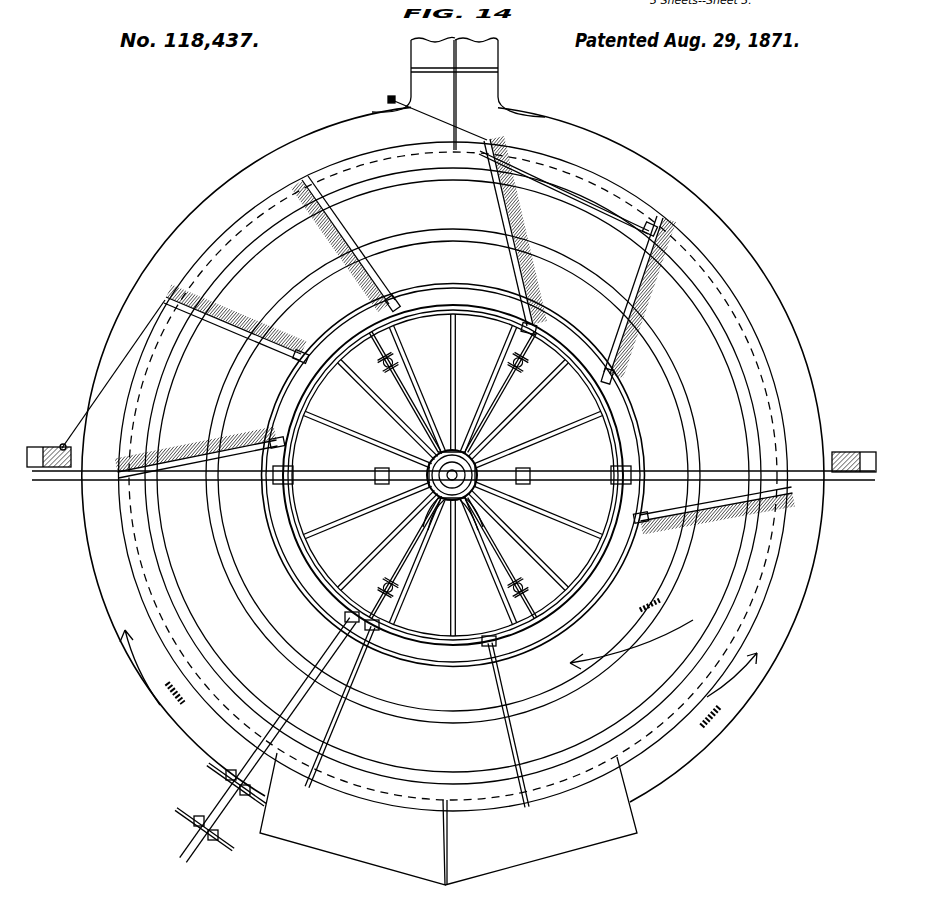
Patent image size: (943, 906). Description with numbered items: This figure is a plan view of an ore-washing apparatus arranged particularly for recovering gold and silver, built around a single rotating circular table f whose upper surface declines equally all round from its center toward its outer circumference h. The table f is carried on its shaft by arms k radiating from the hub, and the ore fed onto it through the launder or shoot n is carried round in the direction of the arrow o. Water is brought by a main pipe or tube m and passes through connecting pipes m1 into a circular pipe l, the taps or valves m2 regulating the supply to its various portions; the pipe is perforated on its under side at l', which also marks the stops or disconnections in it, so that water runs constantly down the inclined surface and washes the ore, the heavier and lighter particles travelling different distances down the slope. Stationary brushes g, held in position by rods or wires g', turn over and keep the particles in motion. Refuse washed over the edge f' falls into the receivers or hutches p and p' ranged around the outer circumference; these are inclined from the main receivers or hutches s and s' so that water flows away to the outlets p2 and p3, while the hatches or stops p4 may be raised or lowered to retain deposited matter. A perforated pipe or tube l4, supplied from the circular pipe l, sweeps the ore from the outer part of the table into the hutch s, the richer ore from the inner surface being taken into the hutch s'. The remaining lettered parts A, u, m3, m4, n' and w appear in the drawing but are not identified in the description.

The receiver or hutch p is at (453, 449).
The outlet p2 is at (453, 476).
The outlet p3 is at (454, 84).
The hatches or stops p4 is at (454, 93).
The receiver or hutch p' is at (451, 608).
The outer circumference h is at (453, 474).
The annular chambers A is at (453, 476).
The perforations or stops l' is at (453, 475).
The circular pipe l is at (422, 540).
The pipe or tube l4 is at (506, 721).
The arms k is at (452, 475).
The spoke u is at (538, 510).
The main pipe or tube m is at (453, 470).
The connecting pipes m1 is at (404, 392).
The taps or valves m2 is at (502, 392).
The valve m3 is at (405, 558).
The valve m4 is at (502, 558).
The launder or shoot n is at (265, 740).
The pipes n' is at (449, 458).
The stationary brushes g is at (455, 348).
The rods or wires g' is at (273, 277).
The circular table f is at (407, 439).
The edge of the table f' is at (568, 189).
The receiver or hutch s is at (541, 821).
The receiver or hutch s' is at (353, 819).
The arrow o is at (438, 662).
The flow marks w is at (451, 663).